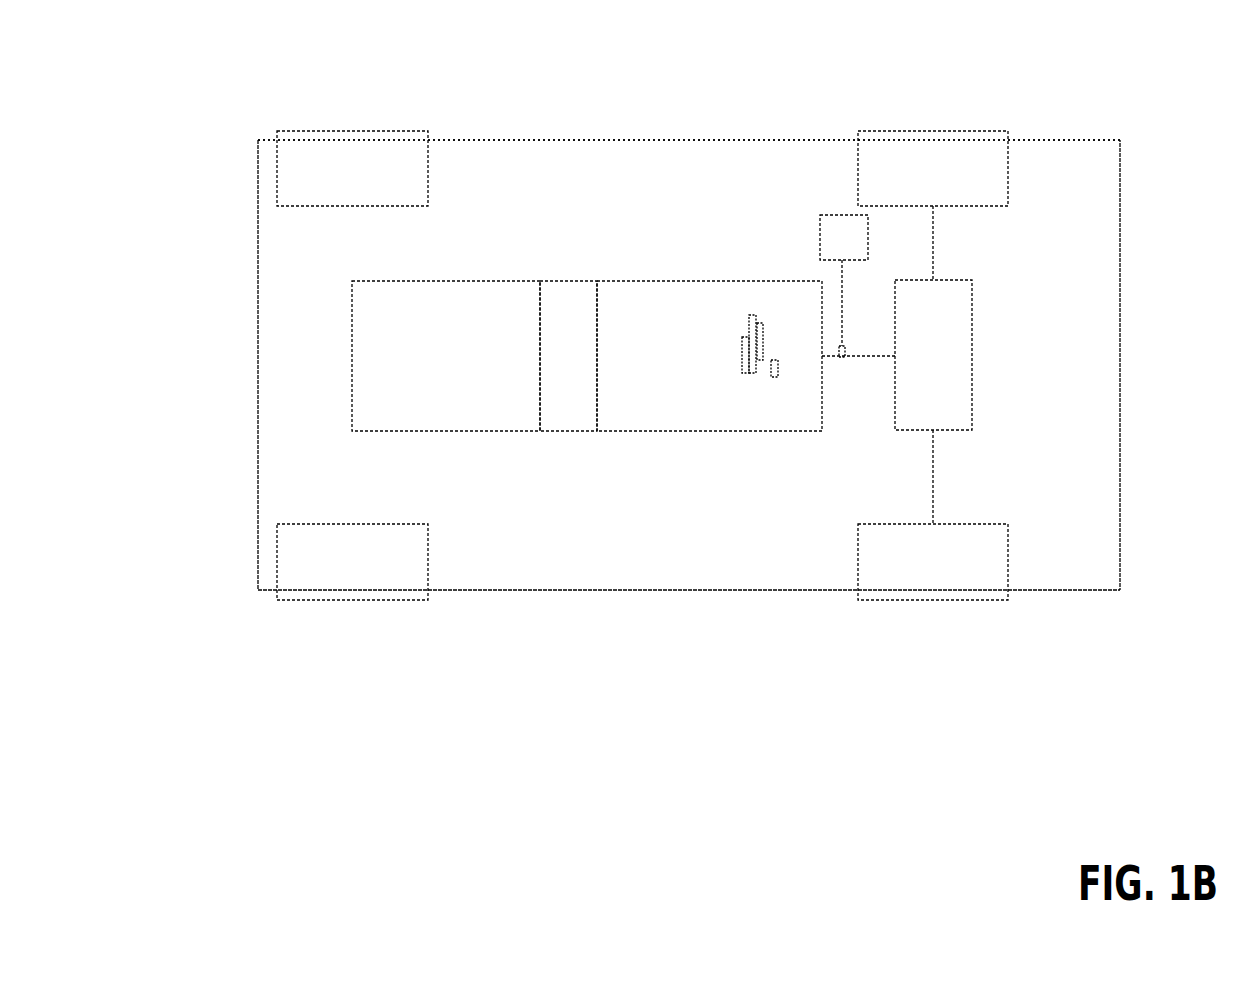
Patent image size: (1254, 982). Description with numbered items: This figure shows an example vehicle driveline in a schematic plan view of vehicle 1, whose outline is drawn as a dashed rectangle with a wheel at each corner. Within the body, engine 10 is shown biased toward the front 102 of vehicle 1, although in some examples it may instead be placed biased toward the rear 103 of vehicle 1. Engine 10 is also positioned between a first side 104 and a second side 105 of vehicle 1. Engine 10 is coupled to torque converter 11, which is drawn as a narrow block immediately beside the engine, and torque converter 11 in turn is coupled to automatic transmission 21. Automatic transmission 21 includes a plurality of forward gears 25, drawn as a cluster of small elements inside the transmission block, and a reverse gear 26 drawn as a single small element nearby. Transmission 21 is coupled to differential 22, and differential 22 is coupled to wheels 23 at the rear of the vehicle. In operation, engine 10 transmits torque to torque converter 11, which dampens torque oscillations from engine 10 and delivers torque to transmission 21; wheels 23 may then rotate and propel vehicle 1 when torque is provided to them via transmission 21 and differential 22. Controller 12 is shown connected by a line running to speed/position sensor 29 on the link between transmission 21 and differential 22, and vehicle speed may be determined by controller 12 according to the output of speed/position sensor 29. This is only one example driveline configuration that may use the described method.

The vehicle 1 is at (805, 67).
The engine 10 is at (432, 367).
The torque converter 11 is at (554, 367).
The controller 12 is at (829, 249).
The automatic transmission 21 is at (694, 367).
The differential 22 is at (933, 355).
The wheels 23 is at (933, 365).
The forward gears 25 is at (764, 317).
The reverse gear 26 is at (784, 379).
The speed/position sensor 29 is at (846, 352).
The front 102 is at (237, 327).
The rear 103 is at (1146, 506).
The first side 104 is at (643, 614).
The second side 105 is at (659, 118).